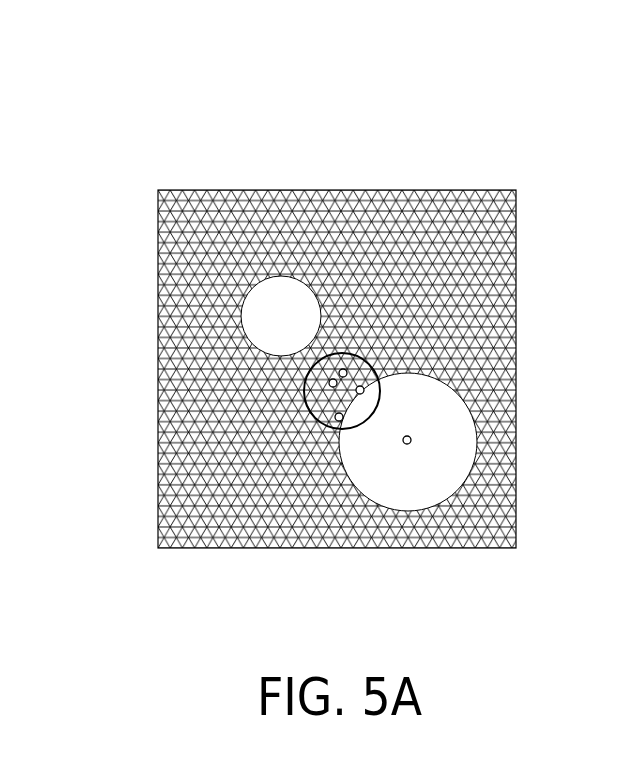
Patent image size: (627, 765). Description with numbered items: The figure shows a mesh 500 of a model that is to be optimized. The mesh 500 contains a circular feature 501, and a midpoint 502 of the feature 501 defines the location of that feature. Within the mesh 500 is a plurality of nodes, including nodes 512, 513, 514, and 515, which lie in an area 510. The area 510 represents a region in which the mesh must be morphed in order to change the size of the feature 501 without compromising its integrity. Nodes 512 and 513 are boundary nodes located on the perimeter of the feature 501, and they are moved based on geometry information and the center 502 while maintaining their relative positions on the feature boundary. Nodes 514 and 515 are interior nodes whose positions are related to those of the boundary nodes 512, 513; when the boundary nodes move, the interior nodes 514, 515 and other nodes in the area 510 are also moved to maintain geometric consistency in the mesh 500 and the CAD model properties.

The mesh 500 is at (204, 50).
The feature 501 is at (460, 432).
The midpoint 502 is at (411, 442).
The area 510 is at (376, 373).
The boundary node 512 is at (340, 421).
The boundary node 513 is at (360, 386).
The interior node 514 is at (329, 386).
The interior node 515 is at (342, 369).